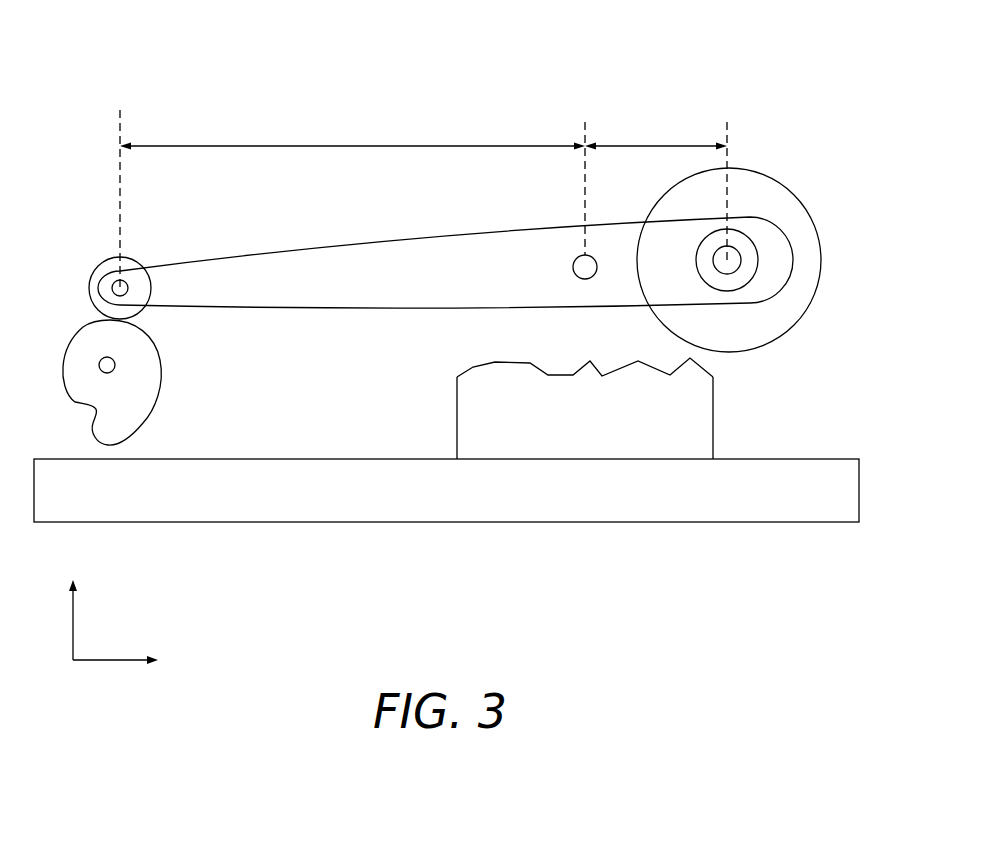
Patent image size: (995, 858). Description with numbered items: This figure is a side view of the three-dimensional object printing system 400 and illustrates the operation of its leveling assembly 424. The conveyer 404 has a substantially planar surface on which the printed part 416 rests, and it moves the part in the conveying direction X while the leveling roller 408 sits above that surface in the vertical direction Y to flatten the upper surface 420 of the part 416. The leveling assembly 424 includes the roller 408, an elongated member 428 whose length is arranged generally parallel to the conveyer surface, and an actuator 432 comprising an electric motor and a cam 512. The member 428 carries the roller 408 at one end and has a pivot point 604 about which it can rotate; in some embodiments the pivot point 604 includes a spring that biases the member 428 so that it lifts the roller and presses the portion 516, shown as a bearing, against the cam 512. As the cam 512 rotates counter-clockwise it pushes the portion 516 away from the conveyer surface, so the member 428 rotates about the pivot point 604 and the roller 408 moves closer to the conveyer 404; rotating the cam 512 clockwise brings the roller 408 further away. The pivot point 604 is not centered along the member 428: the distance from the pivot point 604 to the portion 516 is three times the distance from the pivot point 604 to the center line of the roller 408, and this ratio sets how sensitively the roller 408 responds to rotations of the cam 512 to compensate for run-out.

The three-dimensional object printing system 400 is at (220, 86).
The conveyer 404 is at (230, 503).
The leveling roller 408 is at (795, 196).
The part 416 is at (688, 424).
The upper surface of the part 420 is at (470, 372).
The leveling assembly 424 is at (465, 112).
The member 428 is at (271, 253).
The actuator 432 is at (171, 382).
The cam 512 is at (165, 389).
The portion of the member 516 is at (103, 277).
The pivot point 604 is at (580, 256).